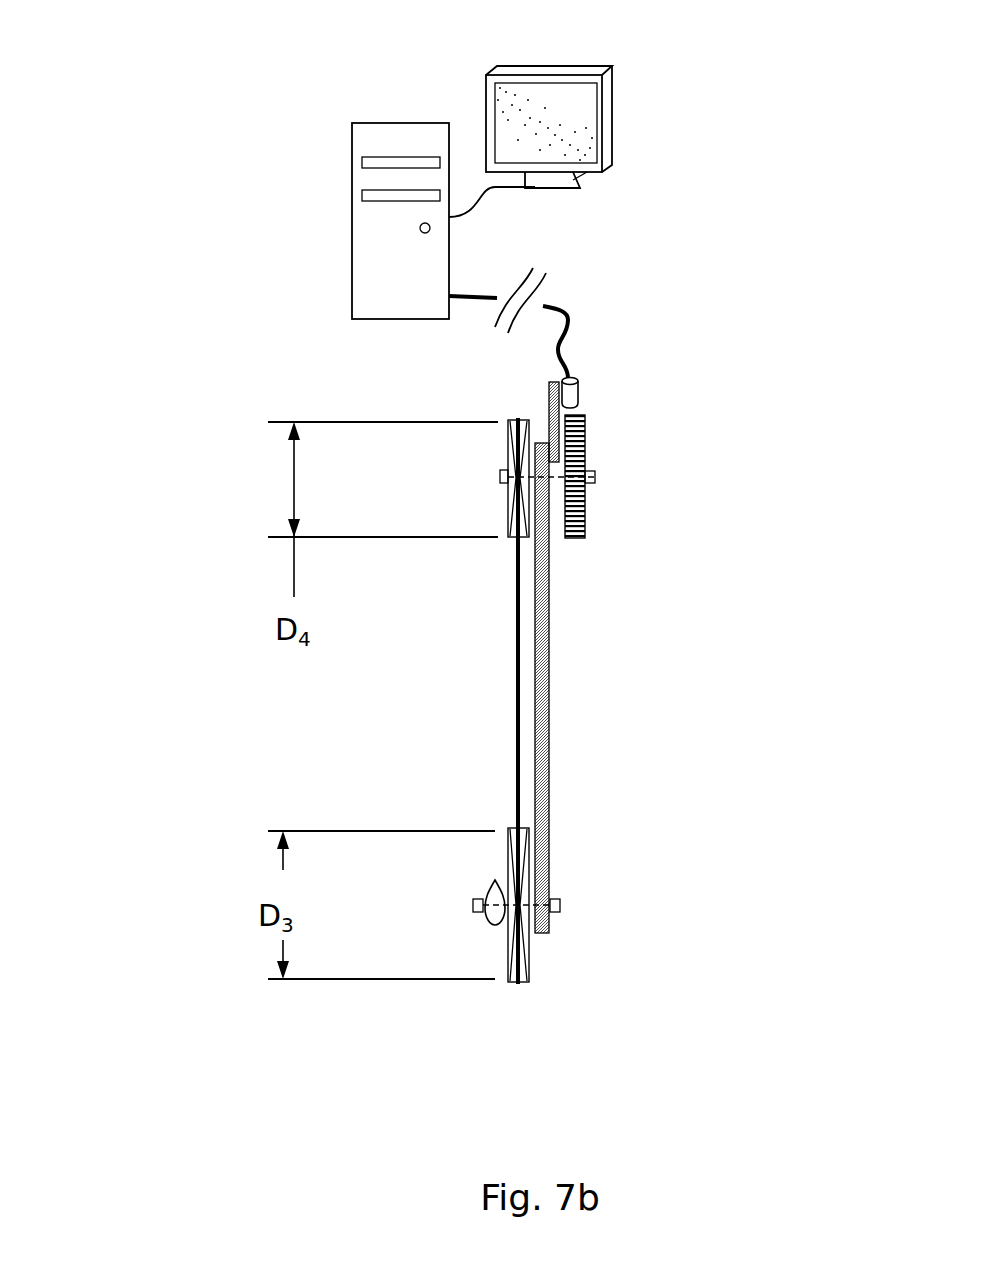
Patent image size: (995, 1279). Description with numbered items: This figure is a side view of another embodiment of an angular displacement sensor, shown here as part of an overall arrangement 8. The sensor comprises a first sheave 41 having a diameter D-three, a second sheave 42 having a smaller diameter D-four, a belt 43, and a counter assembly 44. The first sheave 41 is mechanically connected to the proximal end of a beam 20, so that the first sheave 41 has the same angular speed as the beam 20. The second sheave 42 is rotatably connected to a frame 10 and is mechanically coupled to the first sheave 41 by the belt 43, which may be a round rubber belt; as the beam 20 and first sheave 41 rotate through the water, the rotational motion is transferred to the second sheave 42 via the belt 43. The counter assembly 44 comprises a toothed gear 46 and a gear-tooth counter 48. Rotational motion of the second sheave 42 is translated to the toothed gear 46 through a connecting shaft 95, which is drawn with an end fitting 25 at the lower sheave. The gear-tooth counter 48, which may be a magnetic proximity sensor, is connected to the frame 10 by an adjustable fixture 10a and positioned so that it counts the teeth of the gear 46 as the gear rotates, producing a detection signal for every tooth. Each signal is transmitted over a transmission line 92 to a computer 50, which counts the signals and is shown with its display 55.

The position measurement system 8 is at (178, 121).
The computer 50 is at (352, 258).
The display monitor 55 is at (615, 138).
The transmission line 92 is at (570, 317).
The gear-tooth counter 48 is at (580, 396).
The adjustable fixture 10a is at (549, 400).
The frame 10 is at (551, 690).
The toothed gear 46 is at (587, 530).
The connecting shaft 95 is at (597, 475).
The counter assembly 44 is at (798, 387).
The second sheave 42 is at (500, 487).
The belt 43 is at (513, 775).
The first sheave 41 is at (530, 961).
The shaft end 25 is at (562, 905).
The beam 20 is at (493, 923).